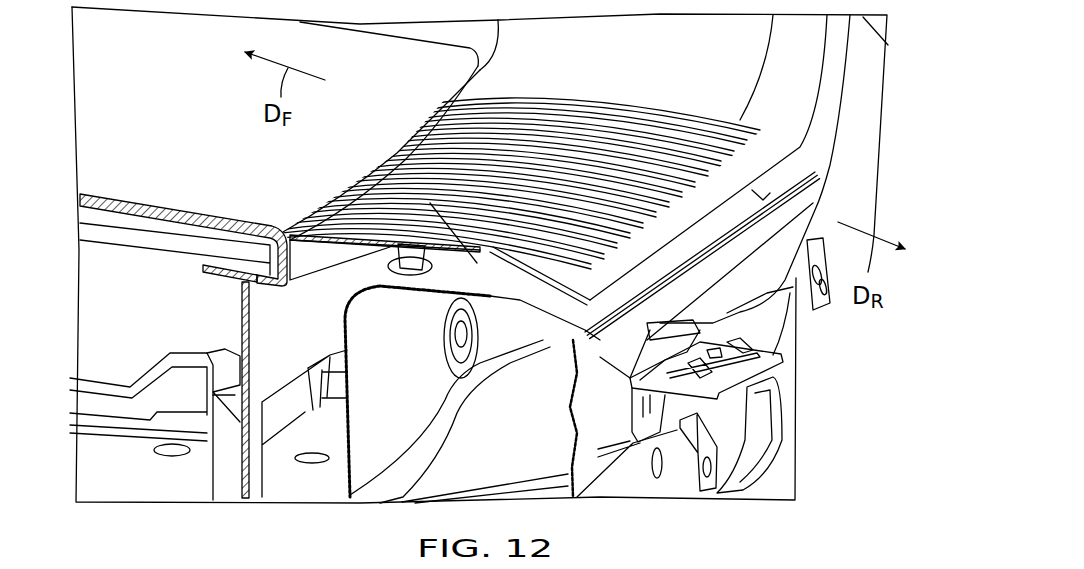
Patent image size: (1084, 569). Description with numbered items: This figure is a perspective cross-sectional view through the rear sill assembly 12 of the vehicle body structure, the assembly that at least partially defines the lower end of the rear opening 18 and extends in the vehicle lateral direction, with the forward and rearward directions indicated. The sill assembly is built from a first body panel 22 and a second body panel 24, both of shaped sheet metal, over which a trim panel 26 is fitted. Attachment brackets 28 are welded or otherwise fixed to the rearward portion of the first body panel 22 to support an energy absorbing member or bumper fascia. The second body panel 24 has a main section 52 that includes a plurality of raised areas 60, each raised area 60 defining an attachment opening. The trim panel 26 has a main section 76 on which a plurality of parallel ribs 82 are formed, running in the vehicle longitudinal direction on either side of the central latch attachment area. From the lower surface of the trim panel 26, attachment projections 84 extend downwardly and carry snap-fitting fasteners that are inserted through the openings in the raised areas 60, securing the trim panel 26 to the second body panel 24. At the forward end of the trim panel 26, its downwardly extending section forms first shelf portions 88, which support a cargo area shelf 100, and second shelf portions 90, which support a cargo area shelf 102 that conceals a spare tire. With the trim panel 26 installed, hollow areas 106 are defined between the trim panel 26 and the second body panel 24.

The rear sill assembly 12 is at (900, 80).
The rear opening 18 is at (292, 347).
The first body panel 22 is at (568, 437).
The second body panel 24 is at (375, 296).
The trim panel 26 is at (805, 150).
The attachment brackets 28 is at (757, 370).
The main section 52 is at (483, 270).
The raised areas 60 is at (383, 248).
The main section 76 is at (583, 128).
The ribs 82 is at (430, 203).
The attachment projections 84 is at (408, 258).
The first shelf portions 88 is at (260, 277).
The second shelf portions 90 is at (213, 390).
The cargo area shelf 100 is at (140, 153).
The cargo area shelf 102 is at (105, 390).
The hollow areas 106 is at (445, 115).